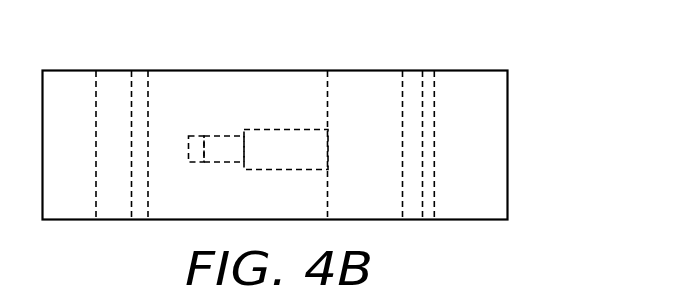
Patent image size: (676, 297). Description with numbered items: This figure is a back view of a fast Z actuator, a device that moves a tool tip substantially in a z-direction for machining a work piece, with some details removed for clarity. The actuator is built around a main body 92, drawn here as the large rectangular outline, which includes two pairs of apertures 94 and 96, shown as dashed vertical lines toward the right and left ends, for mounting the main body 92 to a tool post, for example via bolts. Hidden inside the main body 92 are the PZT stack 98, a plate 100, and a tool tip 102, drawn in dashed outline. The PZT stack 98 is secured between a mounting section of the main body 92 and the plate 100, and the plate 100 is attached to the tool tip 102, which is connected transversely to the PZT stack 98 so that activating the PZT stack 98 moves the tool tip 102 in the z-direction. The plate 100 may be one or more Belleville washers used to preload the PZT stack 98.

The main body 92 is at (476, 86).
The apertures 94 is at (422, 92).
The apertures 96 is at (133, 88).
The PZT stack 98 is at (276, 128).
The plate 100 is at (219, 163).
The tool tip 102 is at (203, 135).